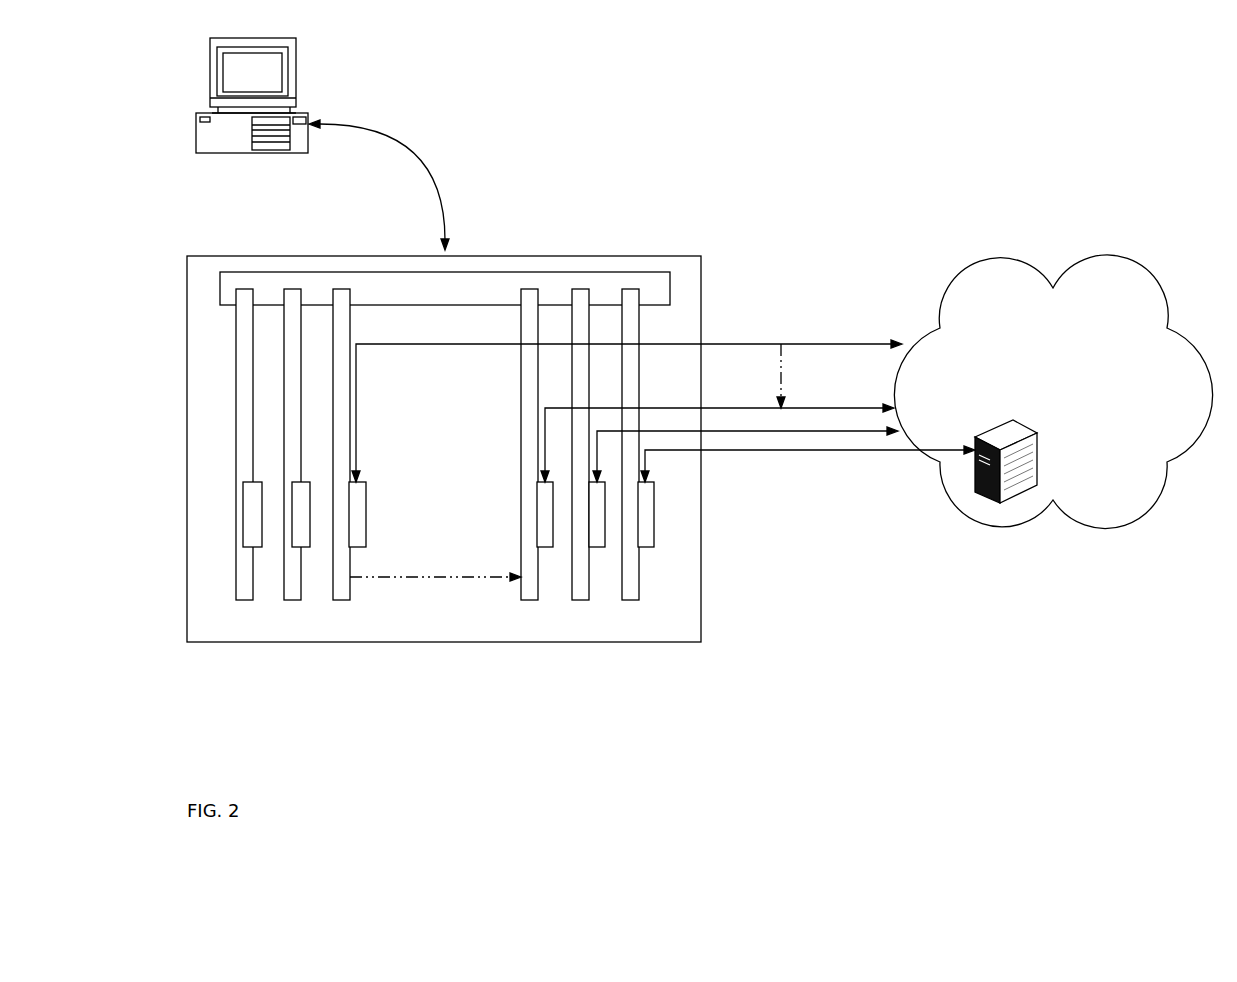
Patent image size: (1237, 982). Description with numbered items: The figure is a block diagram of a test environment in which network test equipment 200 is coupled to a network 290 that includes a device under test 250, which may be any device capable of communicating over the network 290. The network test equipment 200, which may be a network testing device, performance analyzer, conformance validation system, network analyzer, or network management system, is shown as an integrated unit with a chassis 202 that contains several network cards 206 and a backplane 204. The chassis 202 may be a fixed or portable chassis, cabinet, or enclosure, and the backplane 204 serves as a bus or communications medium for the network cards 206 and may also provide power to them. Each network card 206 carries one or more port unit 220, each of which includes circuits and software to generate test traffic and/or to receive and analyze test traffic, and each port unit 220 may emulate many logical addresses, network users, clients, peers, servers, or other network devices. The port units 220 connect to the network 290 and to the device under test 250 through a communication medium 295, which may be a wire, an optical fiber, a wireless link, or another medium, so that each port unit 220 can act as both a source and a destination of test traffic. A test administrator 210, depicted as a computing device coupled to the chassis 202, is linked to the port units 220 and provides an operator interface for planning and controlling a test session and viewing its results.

The network test equipment 200 is at (640, 58).
The chassis 202 is at (560, 256).
The backplane 204 is at (620, 272).
The network cards 206 is at (649, 655).
The test administrator 210 is at (309, 144).
The port unit 220 is at (646, 547).
The device under test 250 is at (1006, 460).
The network 290 is at (1053, 391).
The communication medium 295 is at (768, 451).